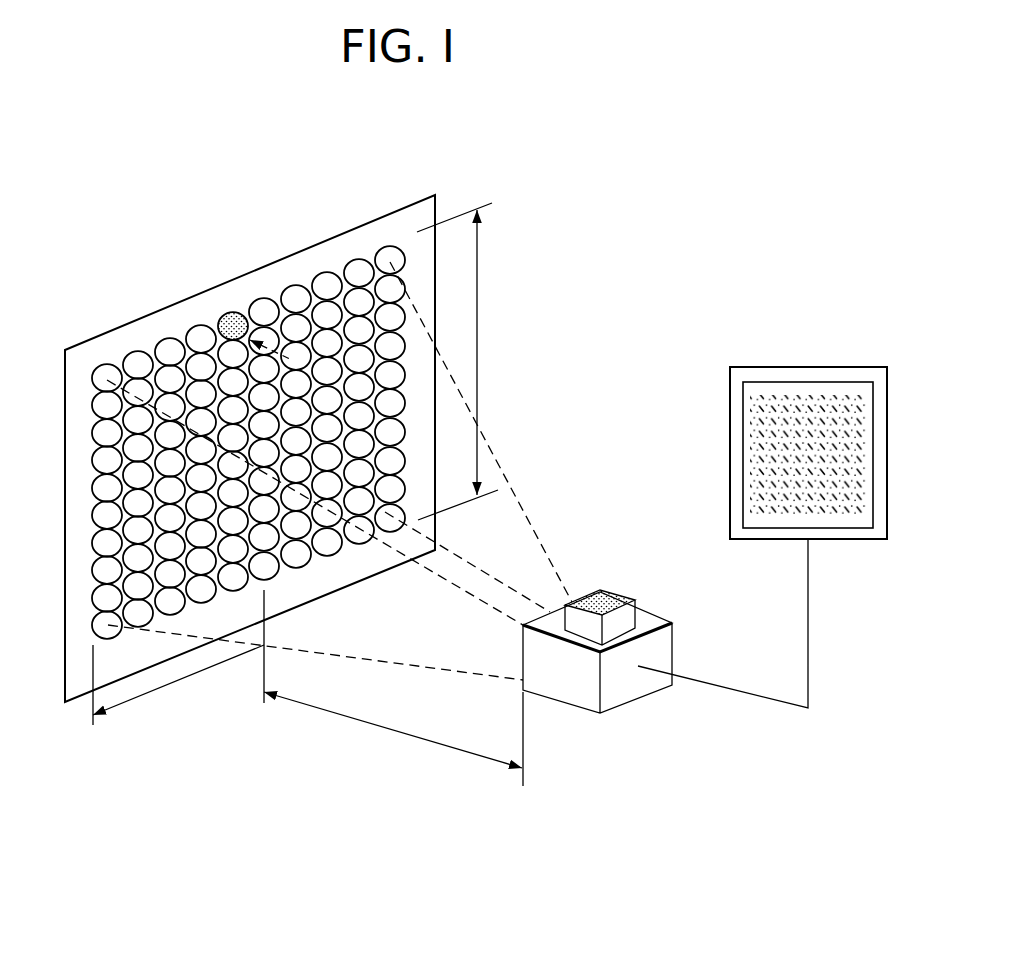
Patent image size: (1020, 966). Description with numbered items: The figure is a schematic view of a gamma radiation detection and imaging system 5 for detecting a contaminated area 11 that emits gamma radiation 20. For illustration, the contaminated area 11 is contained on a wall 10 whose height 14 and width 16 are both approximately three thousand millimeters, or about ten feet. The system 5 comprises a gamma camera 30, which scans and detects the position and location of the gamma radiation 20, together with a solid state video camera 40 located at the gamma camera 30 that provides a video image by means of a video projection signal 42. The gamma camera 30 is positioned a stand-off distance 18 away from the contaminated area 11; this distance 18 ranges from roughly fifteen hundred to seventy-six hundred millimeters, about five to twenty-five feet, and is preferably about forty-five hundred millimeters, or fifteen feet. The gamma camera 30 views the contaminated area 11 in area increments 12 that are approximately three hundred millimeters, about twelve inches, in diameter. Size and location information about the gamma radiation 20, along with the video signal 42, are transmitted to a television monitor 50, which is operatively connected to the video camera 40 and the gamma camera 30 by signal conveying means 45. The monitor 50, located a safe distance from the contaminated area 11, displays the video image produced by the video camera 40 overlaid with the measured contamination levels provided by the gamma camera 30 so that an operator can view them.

The gamma radiation detection and imaging system 5 is at (637, 392).
The wall 10 is at (353, 247).
The contaminated area 11 is at (222, 247).
The area increments 12 is at (215, 317).
The height 14 is at (478, 289).
The width 16 is at (127, 705).
The stand-off distance 18 is at (453, 752).
The gamma radiation 20 is at (403, 663).
The gamma camera 30 is at (640, 702).
The solid state video camera 40 is at (617, 593).
The video projection signal 42 is at (538, 533).
The signal conveying means 45 is at (808, 662).
The television monitor 50 is at (818, 372).